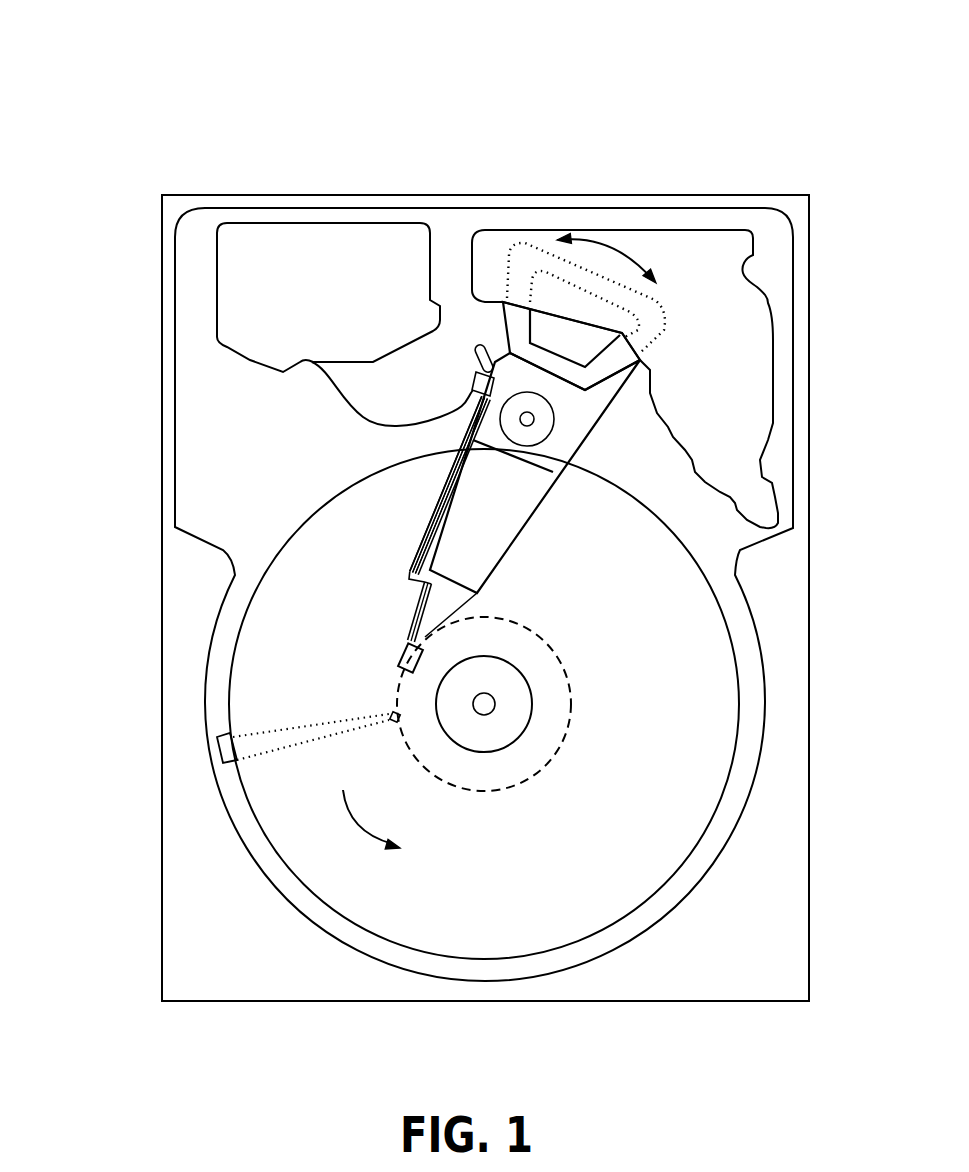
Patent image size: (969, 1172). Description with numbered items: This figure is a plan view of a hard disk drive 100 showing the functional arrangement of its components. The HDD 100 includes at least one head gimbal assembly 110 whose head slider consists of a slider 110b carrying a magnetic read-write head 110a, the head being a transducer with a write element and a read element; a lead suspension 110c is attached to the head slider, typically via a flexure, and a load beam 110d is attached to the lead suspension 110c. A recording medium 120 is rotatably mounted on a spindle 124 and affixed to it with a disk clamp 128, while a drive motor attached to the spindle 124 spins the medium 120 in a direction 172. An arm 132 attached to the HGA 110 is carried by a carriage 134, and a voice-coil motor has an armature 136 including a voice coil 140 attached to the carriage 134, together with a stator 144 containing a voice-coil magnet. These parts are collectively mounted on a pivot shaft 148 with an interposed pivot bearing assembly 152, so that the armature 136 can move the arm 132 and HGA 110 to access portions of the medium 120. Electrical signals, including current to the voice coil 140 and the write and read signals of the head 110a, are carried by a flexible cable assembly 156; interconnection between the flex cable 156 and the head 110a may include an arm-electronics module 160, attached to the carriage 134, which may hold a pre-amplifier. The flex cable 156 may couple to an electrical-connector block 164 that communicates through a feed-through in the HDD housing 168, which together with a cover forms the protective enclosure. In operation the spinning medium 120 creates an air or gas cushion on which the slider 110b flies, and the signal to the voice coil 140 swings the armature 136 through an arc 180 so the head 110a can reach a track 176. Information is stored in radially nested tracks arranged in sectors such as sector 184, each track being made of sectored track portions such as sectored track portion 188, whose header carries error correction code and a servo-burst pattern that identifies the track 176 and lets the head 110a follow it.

The hard disk drive 100 is at (85, 66).
The head gimbal assembly 110 is at (92, 505).
The magnetic read-write head 110a is at (399, 662).
The slider 110b is at (420, 616).
The lead suspension 110c is at (417, 592).
The load beam 110d is at (412, 576).
The recording medium 120 is at (668, 656).
The spindle 124 is at (494, 702).
The disk clamp 128 is at (510, 719).
The arm 132 is at (477, 537).
The carriage 134 is at (545, 453).
The armature 136 is at (503, 337).
The voice coil 140 is at (520, 312).
The stator 144 is at (737, 322).
The pivot shaft 148 is at (530, 420).
The pivot bearing assembly 152 is at (541, 433).
The flexible cable assembly 156 is at (342, 397).
The arm-electronics module 160 is at (473, 383).
The electrical-connector block 164 is at (242, 295).
The HDD housing 168 is at (792, 204).
The direction 172 is at (378, 822).
The track 176 is at (560, 663).
The arc 180 is at (607, 263).
The sector 184 is at (217, 750).
The sectored track portion 188 is at (391, 716).